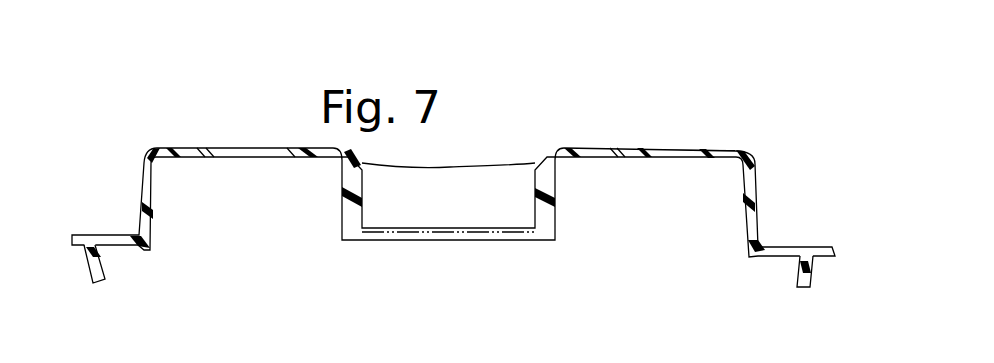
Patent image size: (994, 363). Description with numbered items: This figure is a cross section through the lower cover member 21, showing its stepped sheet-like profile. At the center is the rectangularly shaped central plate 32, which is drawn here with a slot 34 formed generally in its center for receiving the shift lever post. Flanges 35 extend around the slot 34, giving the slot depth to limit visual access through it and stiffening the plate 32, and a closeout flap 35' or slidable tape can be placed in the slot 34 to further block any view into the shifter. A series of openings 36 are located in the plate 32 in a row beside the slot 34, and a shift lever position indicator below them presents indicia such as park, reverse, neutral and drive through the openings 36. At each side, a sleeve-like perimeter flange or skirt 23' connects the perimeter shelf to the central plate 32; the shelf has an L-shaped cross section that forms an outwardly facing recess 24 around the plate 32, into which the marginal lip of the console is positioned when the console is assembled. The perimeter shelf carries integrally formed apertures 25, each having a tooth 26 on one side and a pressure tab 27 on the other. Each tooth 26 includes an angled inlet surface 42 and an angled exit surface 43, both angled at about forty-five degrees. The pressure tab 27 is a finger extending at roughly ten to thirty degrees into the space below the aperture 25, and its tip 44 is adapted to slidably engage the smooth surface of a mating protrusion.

The lower cover member 21 is at (767, 107).
The perimeter flange or skirt 23' is at (447, 206).
The outwardly facing recess 24 is at (107, 196).
The aperture 25 is at (108, 238).
The tooth 26 is at (133, 244).
The pressure tab 27 is at (92, 273).
The central plate 32 is at (653, 149).
The slot 34 is at (470, 177).
The flange 35 is at (326, 212).
The closeout flap 35' is at (448, 253).
The opening 36 is at (266, 150).
The angled inlet surface 42 is at (762, 240).
The angled exit surface 43 is at (752, 263).
The tip 44 is at (802, 287).